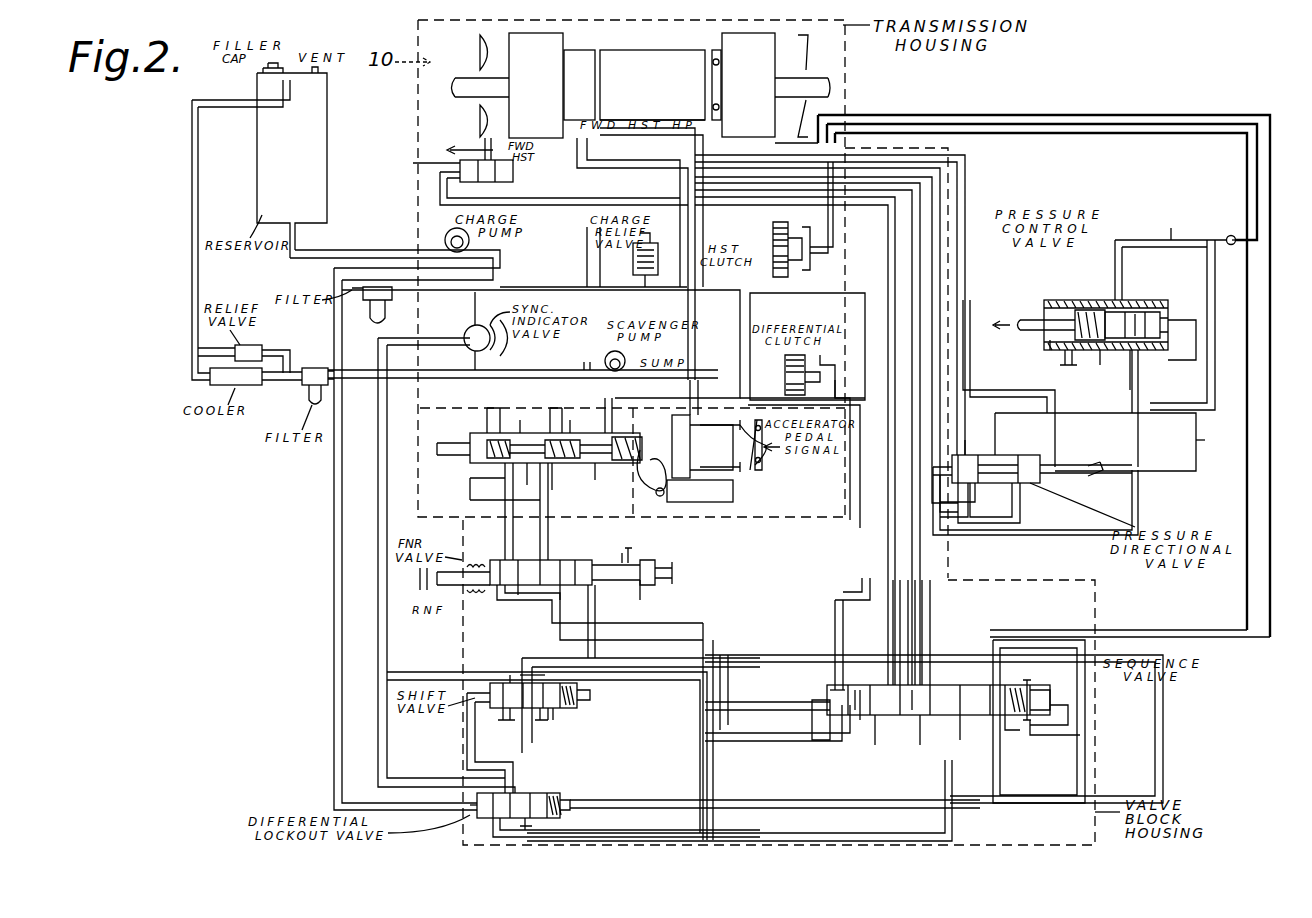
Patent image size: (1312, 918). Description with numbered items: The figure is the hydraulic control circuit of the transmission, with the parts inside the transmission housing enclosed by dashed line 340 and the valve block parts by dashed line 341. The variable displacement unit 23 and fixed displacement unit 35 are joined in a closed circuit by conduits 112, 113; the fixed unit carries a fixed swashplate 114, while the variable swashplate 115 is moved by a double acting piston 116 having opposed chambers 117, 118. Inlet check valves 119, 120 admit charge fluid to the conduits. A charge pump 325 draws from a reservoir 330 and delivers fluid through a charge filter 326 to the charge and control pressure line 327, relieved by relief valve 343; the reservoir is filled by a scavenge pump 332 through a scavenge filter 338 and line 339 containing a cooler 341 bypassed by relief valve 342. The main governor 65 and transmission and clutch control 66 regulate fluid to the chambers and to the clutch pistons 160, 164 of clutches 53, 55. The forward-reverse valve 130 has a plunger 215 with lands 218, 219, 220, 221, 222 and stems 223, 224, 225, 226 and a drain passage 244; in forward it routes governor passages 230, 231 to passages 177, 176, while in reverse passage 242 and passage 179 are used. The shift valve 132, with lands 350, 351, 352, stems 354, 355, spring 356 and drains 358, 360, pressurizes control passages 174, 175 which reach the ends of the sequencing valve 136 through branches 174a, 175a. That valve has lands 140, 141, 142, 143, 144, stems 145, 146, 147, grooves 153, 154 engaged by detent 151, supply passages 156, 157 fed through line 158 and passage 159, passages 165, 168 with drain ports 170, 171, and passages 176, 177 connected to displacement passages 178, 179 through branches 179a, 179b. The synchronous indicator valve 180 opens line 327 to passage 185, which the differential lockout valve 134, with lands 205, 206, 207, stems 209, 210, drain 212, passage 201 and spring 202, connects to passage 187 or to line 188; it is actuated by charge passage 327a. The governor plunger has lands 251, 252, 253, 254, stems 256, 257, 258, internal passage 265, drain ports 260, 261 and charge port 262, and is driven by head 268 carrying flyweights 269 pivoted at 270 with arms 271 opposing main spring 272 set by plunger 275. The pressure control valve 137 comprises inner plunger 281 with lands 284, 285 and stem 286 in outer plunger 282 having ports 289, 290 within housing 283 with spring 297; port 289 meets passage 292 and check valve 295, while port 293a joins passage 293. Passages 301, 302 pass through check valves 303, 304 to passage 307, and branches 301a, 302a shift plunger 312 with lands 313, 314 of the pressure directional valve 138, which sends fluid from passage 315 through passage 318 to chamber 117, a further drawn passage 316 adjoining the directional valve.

The variable displacement axial piston hydraulic unit 23 is at (542, 64).
The fixed displacement axial piston hydraulic unit 35 is at (752, 82).
The clutch 53 is at (767, 277).
The clutch 55 is at (778, 379).
The main governor 65 is at (648, 517).
The transmission and clutch control 66 is at (1140, 757).
The conduit 112 is at (610, 130).
The conduit 113 is at (620, 50).
The fixed cam or swashplate 114 is at (810, 63).
The variable cam or swashplate 115 is at (480, 46).
The double acting piston 116 is at (490, 186).
The chamber 117 is at (505, 178).
The chamber 118 is at (417, 166).
The inlet check valve 119 is at (720, 107).
The inlet check valve 120 is at (732, 54).
The forward-reverse valve 130 is at (411, 582).
The shift valve 132 is at (438, 694).
The differential lockout valve 134 is at (703, 370).
The sequencing valve 136 is at (843, 655).
The pressure control valve 137 is at (1067, 283).
The pressure directional control valve 138 is at (987, 402).
The land 140 is at (832, 690).
The land 141 is at (890, 723).
The land 142 is at (925, 721).
The land 143 is at (962, 721).
The land 144 is at (1010, 690).
The reduced stem portion 145 is at (858, 693).
The reduced stem portion 146 is at (985, 688).
The reduced stem portion 147 is at (935, 690).
The detent assembly 151 is at (1075, 726).
The groove 153 is at (1035, 690).
The groove 154 is at (1030, 680).
The supply passage 156 is at (880, 655).
The supply passage 157 is at (975, 695).
The line 158 is at (735, 660).
The passage 159 is at (645, 612).
The clutch shift piston 160 is at (818, 388).
The clutch shift piston 164 is at (800, 222).
The passage 165 is at (850, 588).
The passage 168 is at (1182, 630).
The drain port 170 is at (835, 735).
The drain port 171 is at (1010, 723).
The control passage 174 is at (745, 700).
The branch passage 174a is at (1075, 713).
The control passage 175 is at (656, 756).
The branch passage 175a is at (812, 713).
The passage 176 is at (712, 628).
The passage 177 is at (728, 648).
The displacement control passage 178 is at (893, 600).
The displacement control passage 179 is at (918, 592).
The branch passage 179a is at (900, 652).
The branch passage 179b is at (950, 660).
The synchronous indicator valve 180 is at (462, 363).
The passage 185 is at (378, 434).
The passage 187 is at (768, 836).
The line 188 is at (485, 740).
The passage 201 is at (648, 808).
The spring 202 is at (575, 806).
The land 205 is at (470, 796).
The land 206 is at (512, 805).
The land 207 is at (548, 800).
The reduced stem portion 209 is at (500, 808).
The reduced stem portion 210 is at (535, 810).
The drain 212 is at (540, 824).
The valve plunger 215 is at (495, 562).
The land 218 is at (505, 606).
The land 219 is at (522, 622).
The land 220 is at (577, 592).
The land 221 is at (687, 223).
The land 222 is at (612, 576).
The reduced stem portion 223 is at (508, 565).
The reduced stem portion 224 is at (548, 568).
The reduced stem portion 225 is at (572, 591).
The reduced stem portion 226 is at (615, 578).
The passage 230 is at (500, 477).
The passage 231 is at (500, 498).
The passage 242 is at (490, 596).
The drain passage 244 is at (610, 470).
The land 251 is at (485, 414).
The land 252 is at (552, 430).
The land 253 is at (578, 433).
The land 254 is at (680, 432).
The reduced stem portion 256 is at (520, 432).
The reduced stem portion 257 is at (558, 468).
The reduced stem portion 258 is at (598, 467).
The drain port 260 is at (488, 427).
The drain port 261 is at (585, 372).
The charge fluid port 262 is at (612, 410).
The internal passage 265 is at (527, 470).
The head 268 is at (683, 425).
The flyweight 269 is at (728, 500).
The pivot 270 is at (663, 496).
The extension arm 271 is at (680, 490).
The main spring 272 is at (740, 468).
The manually controllable plunger 275 is at (770, 455).
The inner plunger 281 is at (1040, 313).
The outer plunger 282 is at (1132, 369).
The housing 283 is at (1150, 312).
The land 284 is at (1080, 381).
The land 285 is at (1140, 349).
The reduced stem portion 286 is at (1105, 353).
The port 289 is at (1124, 300).
The port 290 is at (1137, 310).
The passage 292 is at (1165, 222).
The passage 293 is at (1159, 440).
The port 293a is at (1133, 361).
The check valve 295 is at (1230, 235).
The spring 297 is at (1088, 300).
The passage 301 is at (577, 165).
The branch passage 301a is at (946, 452).
The passage 302 is at (585, 80).
The branch passage 302a is at (1040, 482).
The check valve 303 is at (1094, 540).
The check valve 304 is at (1103, 472).
The passage 307 is at (1196, 448).
The plunger 312 is at (1003, 465).
The land 313 is at (968, 450).
The land 314 is at (1030, 460).
The passage 315 is at (1215, 270).
The line 316 is at (1020, 516).
The passage 318 is at (960, 527).
The charge pump 325 is at (445, 236).
The charge filter 326 is at (387, 318).
The charge and control pressure line 327 is at (510, 292).
The charge passage 327a is at (333, 487).
The reservoir 330 is at (262, 175).
The scavenge pump 332 is at (625, 357).
The scavenge filter 338 is at (306, 398).
The line or passage 339 is at (190, 232).
The dashed line 340 is at (850, 95).
The cooler 341 is at (210, 391).
The relief valve 342 is at (258, 345).
The relief valve 343 is at (633, 263).
The land 350 is at (490, 688).
The land 351 is at (506, 677).
The land 352 is at (548, 686).
The reduced stem portion 354 is at (520, 695).
The reduced stem portion 355 is at (545, 718).
The spring 356 is at (570, 688).
The drain 358 is at (585, 705).
The drain 360 is at (540, 700).